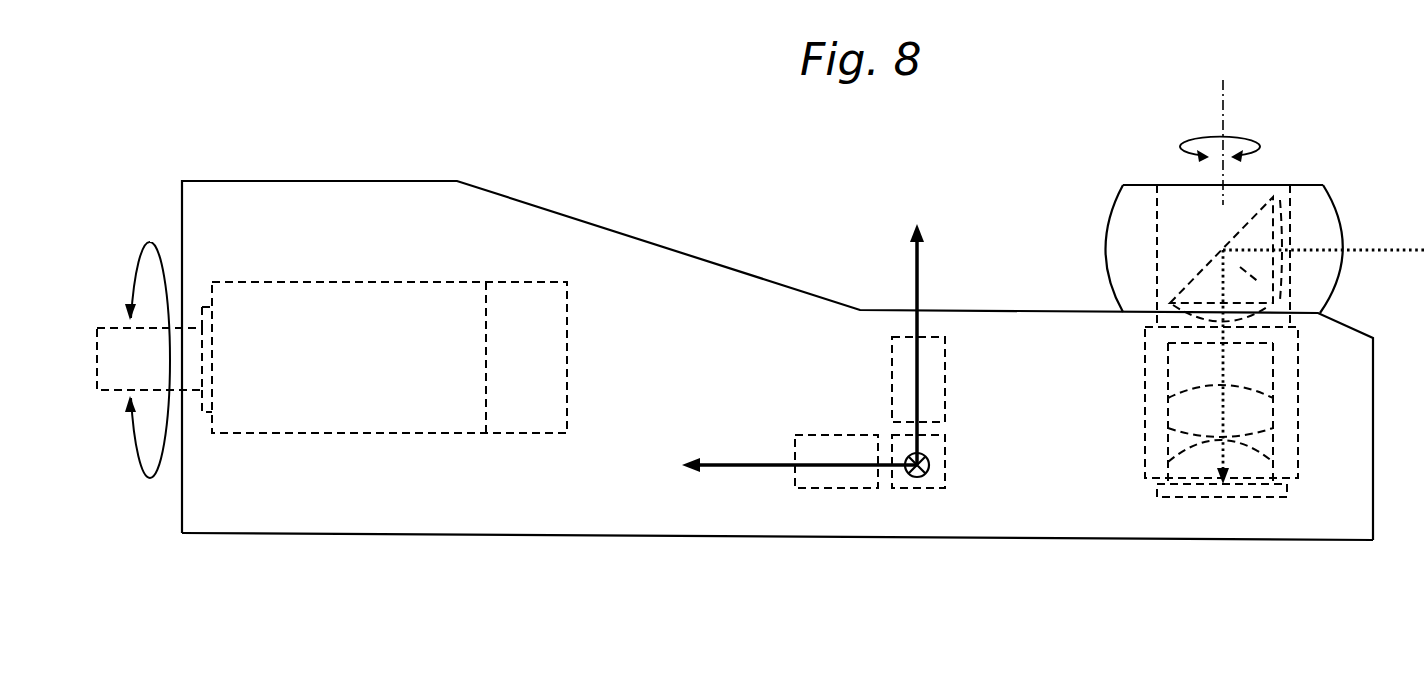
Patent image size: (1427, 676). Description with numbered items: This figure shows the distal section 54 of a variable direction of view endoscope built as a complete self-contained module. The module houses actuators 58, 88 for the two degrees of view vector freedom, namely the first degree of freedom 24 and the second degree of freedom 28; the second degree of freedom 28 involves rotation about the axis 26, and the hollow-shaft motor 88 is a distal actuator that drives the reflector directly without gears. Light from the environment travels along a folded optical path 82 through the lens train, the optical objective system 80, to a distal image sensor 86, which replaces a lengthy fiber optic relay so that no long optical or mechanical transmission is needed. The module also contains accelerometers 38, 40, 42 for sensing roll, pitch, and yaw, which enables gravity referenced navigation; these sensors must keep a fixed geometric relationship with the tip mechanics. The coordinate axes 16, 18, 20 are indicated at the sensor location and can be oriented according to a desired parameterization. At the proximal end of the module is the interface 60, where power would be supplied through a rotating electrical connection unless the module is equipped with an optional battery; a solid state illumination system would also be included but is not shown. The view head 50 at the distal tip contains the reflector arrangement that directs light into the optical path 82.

The coordinate axis 16 is at (930, 468).
The coordinate axis 18 is at (733, 460).
The coordinate axis 20 is at (915, 272).
The first degree of freedom 24 is at (108, 328).
The axis 26 is at (1223, 90).
The second degree of freedom 28 is at (1265, 147).
The accelerometer 38 is at (940, 450).
The accelerometer 40 is at (836, 433).
The accelerometer 42 is at (945, 372).
The optical head 50 is at (1338, 285).
The distal section 54 is at (812, 530).
The actuator 58 is at (368, 427).
The interface 60 is at (182, 203).
The optical objective system 80 is at (1140, 380).
The folded optical path 82 is at (1401, 250).
The image sensor 86 is at (1262, 490).
The hollow-shaft motor 88 is at (1156, 253).